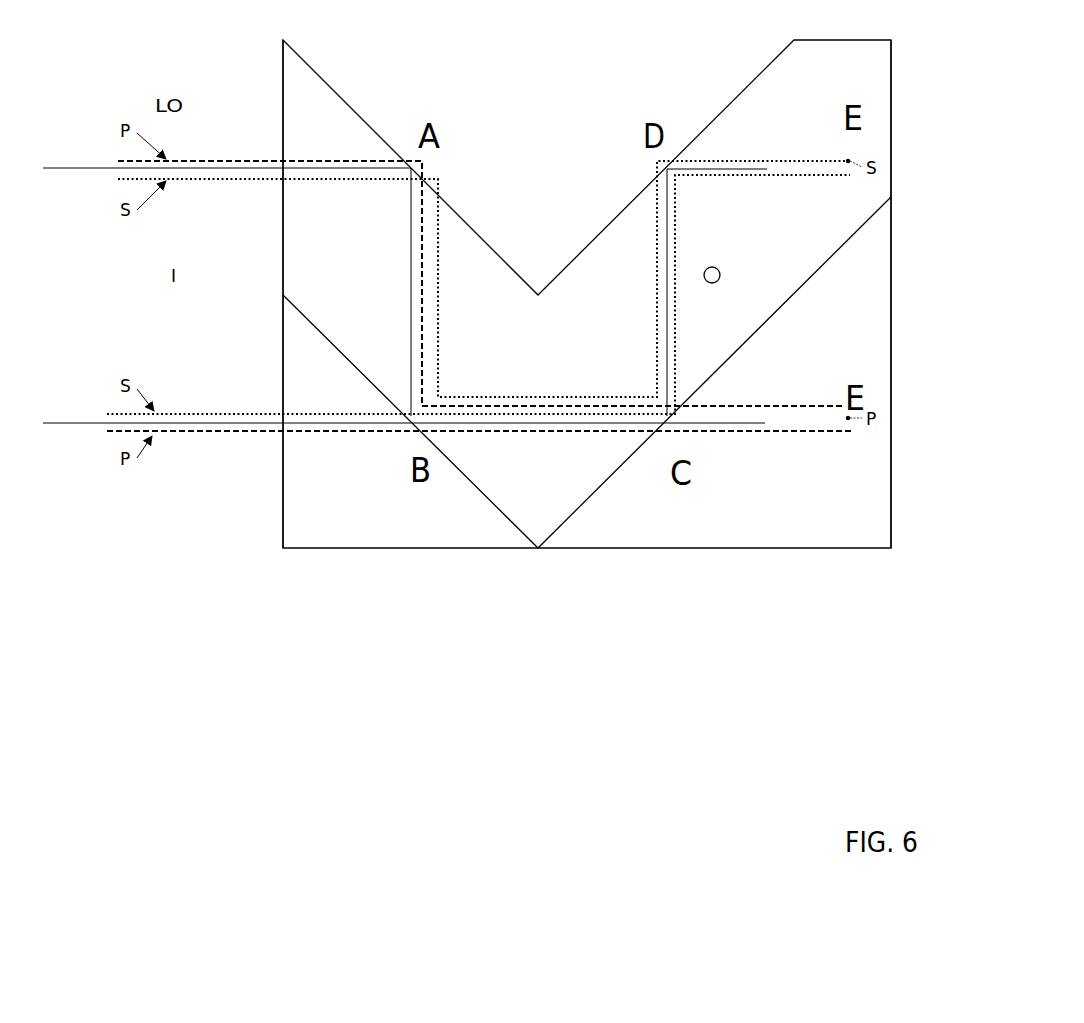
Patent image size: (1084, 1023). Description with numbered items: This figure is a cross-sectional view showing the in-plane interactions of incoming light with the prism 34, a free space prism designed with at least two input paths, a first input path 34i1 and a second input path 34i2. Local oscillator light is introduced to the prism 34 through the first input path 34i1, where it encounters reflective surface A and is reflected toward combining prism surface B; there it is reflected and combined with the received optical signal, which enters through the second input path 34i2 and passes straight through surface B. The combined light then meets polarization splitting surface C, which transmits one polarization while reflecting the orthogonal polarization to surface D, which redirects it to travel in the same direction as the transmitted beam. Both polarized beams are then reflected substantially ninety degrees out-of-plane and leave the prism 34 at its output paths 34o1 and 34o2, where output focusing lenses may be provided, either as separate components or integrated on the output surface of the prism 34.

The prism 34 is at (282, 596).
The first input path 34i1 is at (446, 228).
The second input path 34i2 is at (447, 358).
The first output face of prism 34o1 is at (927, 118).
The second output face of prism 34o2 is at (924, 372).